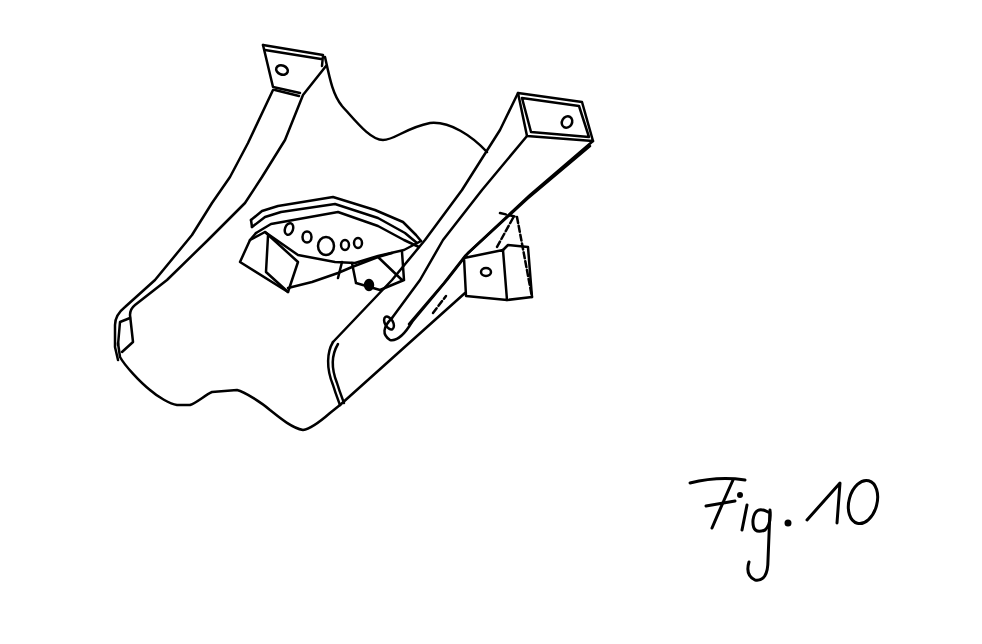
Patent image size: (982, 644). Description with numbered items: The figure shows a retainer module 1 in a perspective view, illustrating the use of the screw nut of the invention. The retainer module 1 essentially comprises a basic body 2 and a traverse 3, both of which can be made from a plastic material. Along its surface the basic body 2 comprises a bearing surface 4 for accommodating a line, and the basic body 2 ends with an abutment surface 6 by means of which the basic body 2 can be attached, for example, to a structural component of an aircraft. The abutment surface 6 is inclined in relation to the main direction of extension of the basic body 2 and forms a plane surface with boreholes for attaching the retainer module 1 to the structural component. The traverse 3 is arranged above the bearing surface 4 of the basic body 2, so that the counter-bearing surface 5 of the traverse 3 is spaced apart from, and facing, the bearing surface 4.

The retainer module 1 is at (612, 345).
The basic body 2 is at (172, 245).
The traverse 3 is at (366, 204).
The bearing surface 4 is at (187, 367).
The counter-bearing surface 5 is at (383, 281).
The abutment surface 6 is at (553, 94).